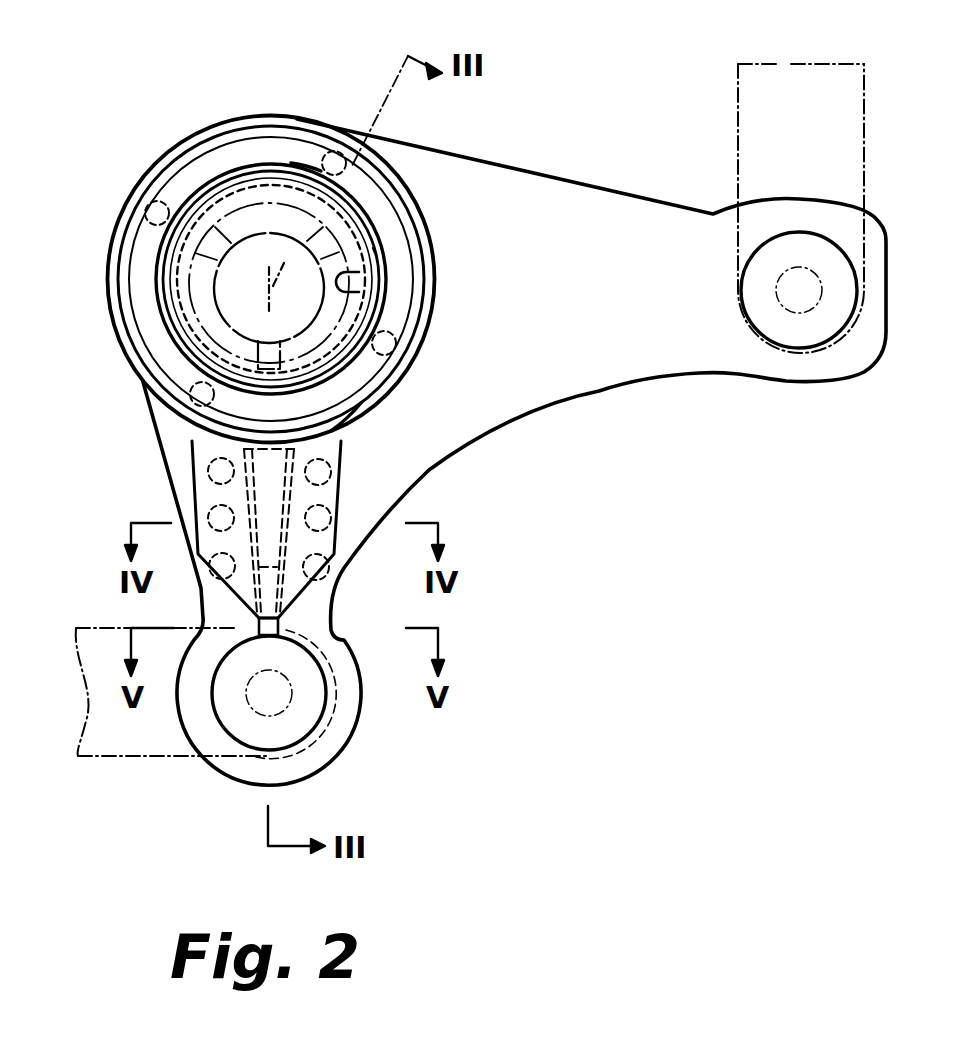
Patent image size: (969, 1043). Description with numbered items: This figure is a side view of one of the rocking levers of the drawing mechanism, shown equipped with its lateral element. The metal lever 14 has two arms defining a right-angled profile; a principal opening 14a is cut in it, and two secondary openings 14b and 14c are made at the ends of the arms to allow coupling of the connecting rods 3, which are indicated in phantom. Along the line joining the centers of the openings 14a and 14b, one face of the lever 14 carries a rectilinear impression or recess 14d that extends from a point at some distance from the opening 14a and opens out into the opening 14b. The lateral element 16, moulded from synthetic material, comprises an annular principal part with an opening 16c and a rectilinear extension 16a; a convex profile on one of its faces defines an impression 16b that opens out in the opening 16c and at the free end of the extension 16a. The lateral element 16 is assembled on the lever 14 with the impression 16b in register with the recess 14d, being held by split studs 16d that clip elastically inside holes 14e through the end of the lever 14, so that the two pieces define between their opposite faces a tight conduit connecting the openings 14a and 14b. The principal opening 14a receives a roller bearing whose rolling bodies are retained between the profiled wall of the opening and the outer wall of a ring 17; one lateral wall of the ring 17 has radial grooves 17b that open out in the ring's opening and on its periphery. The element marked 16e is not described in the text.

The connecting rods 3 is at (802, 88).
The metal lever 14 is at (626, 352).
The principal opening 14a is at (295, 160).
The secondary opening 14b is at (312, 712).
The secondary opening 14c is at (790, 335).
The impression or recess 14d is at (300, 497).
The holes 14e is at (430, 316).
The lateral element 16 is at (417, 200).
The rectilinear extension 16a is at (278, 620).
The impression 16b is at (290, 410).
The opening 16c is at (352, 282).
The split studs 16d is at (158, 160).
The tab of spring bracket 16e is at (372, 247).
The ring 17 is at (215, 330).
The radial grooves 17b is at (322, 160).